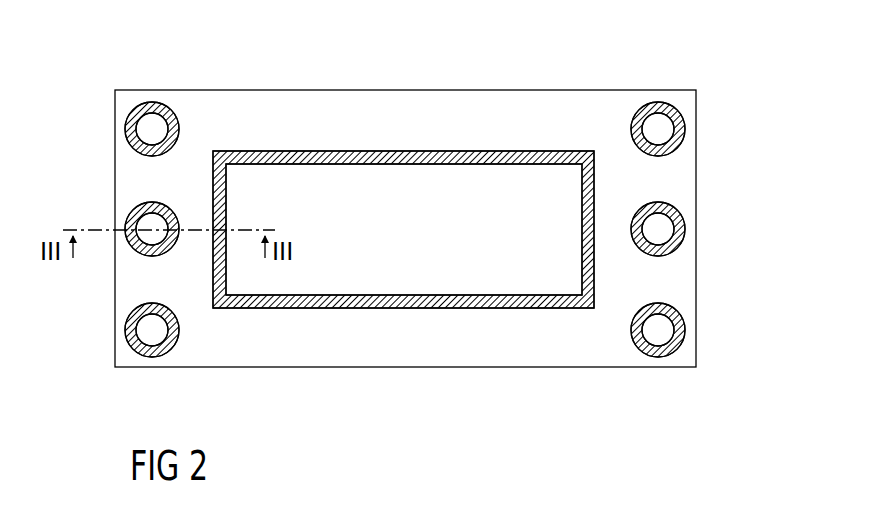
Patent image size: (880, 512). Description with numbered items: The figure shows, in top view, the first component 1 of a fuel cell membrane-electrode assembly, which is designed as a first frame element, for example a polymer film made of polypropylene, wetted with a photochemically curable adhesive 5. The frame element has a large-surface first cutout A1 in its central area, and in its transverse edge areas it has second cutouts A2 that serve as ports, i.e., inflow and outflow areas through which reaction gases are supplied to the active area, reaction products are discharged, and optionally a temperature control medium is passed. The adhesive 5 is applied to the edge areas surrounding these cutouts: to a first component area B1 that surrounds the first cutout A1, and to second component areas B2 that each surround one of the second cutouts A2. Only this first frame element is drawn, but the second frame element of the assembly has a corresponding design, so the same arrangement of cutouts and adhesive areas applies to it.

The first component 1 is at (452, 106).
The adhesive 5 is at (491, 156).
The first cutout A1 is at (333, 180).
The first component area B1 is at (386, 142).
The second cutouts A2 is at (143, 124).
The second component areas B2 is at (126, 151).